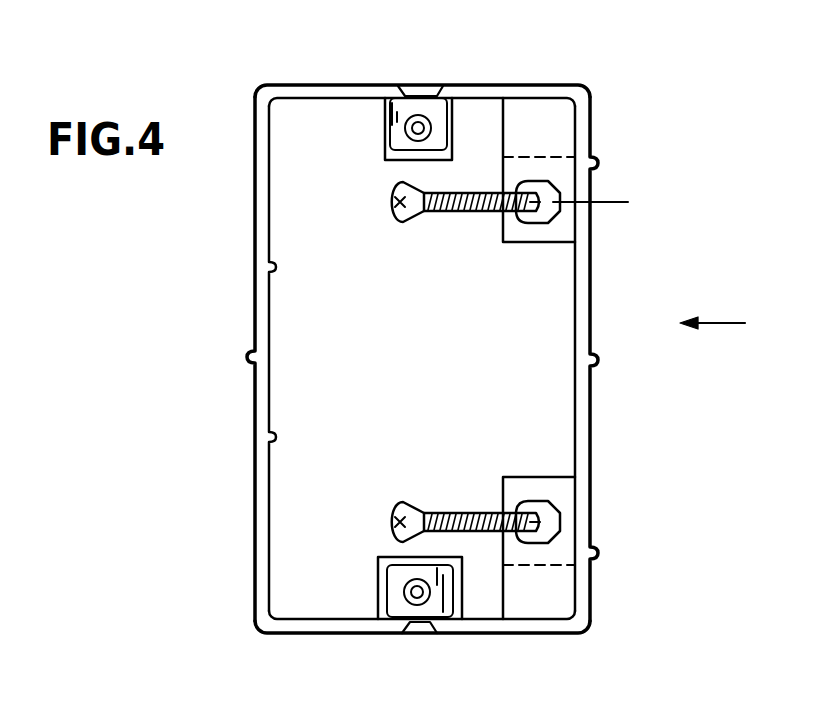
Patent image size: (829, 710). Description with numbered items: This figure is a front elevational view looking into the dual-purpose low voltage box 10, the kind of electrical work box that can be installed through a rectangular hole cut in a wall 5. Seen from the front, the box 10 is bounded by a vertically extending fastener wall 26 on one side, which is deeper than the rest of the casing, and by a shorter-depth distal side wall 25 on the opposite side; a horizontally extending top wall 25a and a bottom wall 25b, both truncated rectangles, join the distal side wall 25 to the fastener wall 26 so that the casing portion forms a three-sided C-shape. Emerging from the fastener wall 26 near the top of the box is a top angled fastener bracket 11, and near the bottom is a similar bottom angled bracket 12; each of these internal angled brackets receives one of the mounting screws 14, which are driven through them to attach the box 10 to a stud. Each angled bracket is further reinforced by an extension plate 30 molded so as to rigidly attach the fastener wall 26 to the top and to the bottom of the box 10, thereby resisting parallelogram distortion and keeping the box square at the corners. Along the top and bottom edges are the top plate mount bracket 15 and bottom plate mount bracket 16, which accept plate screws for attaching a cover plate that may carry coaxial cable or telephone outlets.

The wall 5 is at (725, 329).
The low voltage box 10 is at (634, 116).
The top angled fastener bracket 11 is at (558, 229).
The bottom angled bracket 12 is at (563, 490).
The mounting screws 14 is at (397, 217).
The top plate mount bracket 15 is at (436, 108).
The bottom plate mount bracket 16 is at (395, 594).
The distal side wall 25 is at (255, 337).
The top wall 25a is at (497, 86).
The bottom wall 25b is at (474, 634).
The fastener wall 26 is at (589, 395).
The extension plate 30 is at (548, 128).